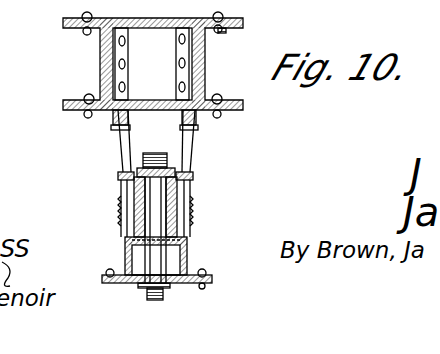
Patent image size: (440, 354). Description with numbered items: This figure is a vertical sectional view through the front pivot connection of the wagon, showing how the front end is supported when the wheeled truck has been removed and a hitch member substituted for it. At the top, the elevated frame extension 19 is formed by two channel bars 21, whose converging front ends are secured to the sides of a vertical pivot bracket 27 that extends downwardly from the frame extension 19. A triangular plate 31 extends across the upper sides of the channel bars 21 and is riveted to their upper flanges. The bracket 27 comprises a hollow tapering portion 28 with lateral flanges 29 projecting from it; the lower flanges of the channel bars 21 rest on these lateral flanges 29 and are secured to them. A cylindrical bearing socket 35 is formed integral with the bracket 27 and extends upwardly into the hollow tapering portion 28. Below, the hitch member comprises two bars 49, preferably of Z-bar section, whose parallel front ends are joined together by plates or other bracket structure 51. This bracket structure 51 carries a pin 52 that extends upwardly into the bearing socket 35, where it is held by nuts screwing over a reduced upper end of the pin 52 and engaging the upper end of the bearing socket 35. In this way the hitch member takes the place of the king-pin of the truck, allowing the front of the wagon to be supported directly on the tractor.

The elevated frame extension 19 is at (83, 82).
The channel bars 21 is at (100, 65).
The vertical pivot bracket 27 is at (194, 163).
The hollow tapering portion 28 is at (191, 180).
The lateral flanges 29 is at (88, 118).
The triangular plate 31 is at (243, 18).
The cylindrical bearing socket 35 is at (191, 200).
The bars 49 is at (127, 258).
The bracket structure 51 is at (195, 285).
The pin 52 is at (158, 221).